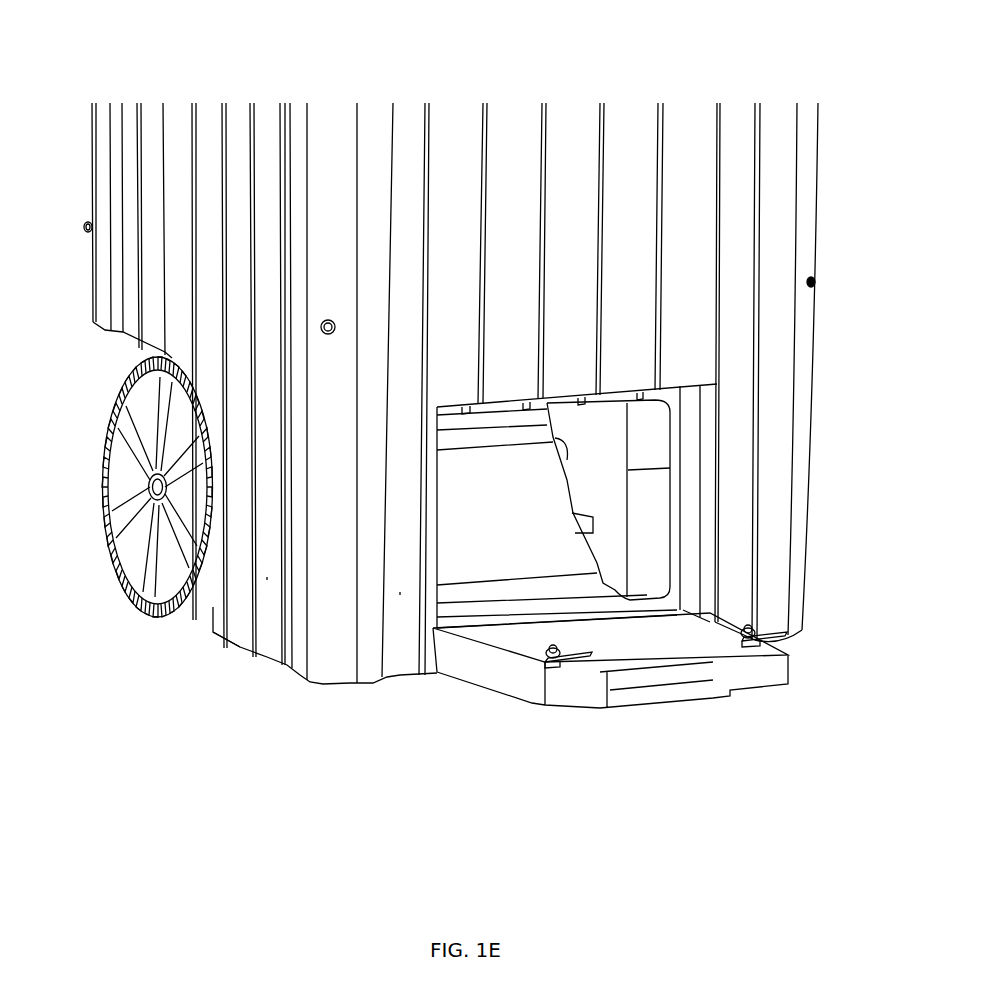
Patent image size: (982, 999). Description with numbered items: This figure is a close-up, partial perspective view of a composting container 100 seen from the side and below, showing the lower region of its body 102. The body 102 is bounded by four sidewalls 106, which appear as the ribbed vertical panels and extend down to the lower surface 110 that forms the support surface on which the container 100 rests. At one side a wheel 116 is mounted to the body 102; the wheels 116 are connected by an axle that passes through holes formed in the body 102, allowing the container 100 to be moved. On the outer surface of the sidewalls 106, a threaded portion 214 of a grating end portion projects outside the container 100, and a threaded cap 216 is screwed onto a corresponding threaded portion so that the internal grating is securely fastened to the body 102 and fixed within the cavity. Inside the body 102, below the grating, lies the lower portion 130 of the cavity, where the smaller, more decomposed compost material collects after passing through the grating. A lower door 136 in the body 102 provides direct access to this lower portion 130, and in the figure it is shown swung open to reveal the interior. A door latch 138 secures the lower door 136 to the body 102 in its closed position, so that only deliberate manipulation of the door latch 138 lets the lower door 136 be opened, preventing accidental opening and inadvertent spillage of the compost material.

The composting container 100 is at (143, 56).
The body 102 is at (812, 365).
The sidewalls 106 is at (400, 592).
The lower surface 110 is at (240, 650).
The wheels 116 is at (140, 545).
The lower portion of the cavity 130 is at (503, 535).
The lower door 136 is at (767, 667).
The door latch 138 is at (748, 650).
The portion of end portion 214 is at (814, 282).
The threaded cap 216 is at (86, 224).